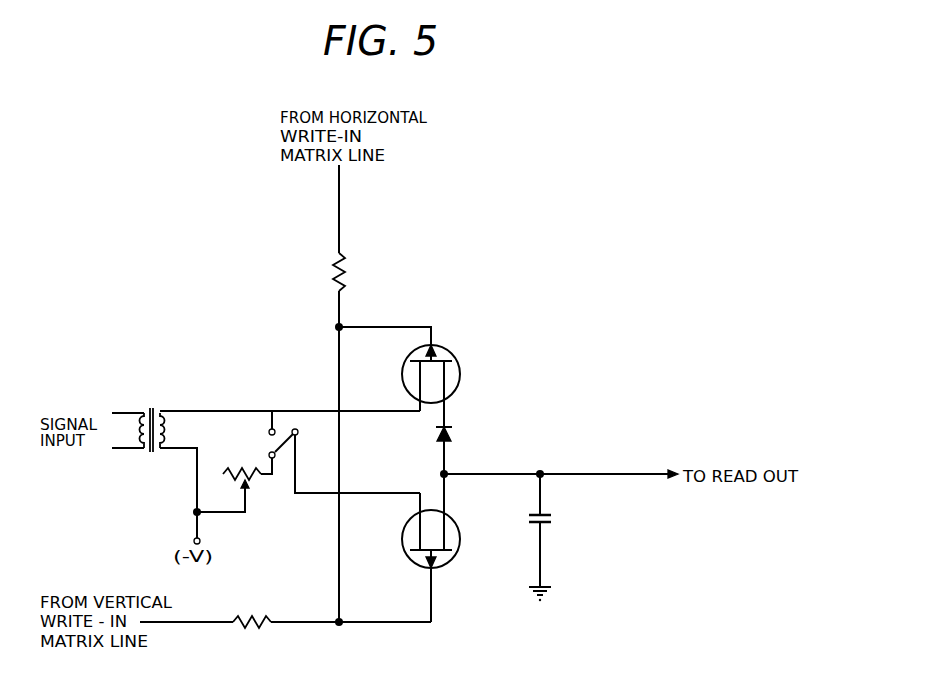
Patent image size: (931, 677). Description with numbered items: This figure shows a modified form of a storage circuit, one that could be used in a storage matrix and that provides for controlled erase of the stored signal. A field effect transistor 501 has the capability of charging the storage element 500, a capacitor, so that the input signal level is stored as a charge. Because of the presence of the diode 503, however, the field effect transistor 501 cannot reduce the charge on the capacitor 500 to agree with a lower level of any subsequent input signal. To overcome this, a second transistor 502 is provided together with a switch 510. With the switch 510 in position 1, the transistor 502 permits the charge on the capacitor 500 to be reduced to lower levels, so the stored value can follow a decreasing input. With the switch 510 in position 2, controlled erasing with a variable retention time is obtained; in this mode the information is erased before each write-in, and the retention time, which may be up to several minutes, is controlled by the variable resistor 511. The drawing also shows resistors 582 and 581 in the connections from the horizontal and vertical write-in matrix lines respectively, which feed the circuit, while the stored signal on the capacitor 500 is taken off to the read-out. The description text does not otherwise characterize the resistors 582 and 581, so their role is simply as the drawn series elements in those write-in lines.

The resistor from horizontal write-in matrix line 582 is at (340, 213).
The resistor from vertical write-in matrix line 581 is at (200, 621).
The field effect transistor 501 is at (446, 349).
The transistor 502 is at (452, 523).
The diode 503 is at (452, 434).
The storage element 500 is at (548, 514).
The switch 510 is at (292, 448).
The variable resistor 511 is at (235, 472).
The position 1 is at (265, 425).
The position 2 is at (265, 460).